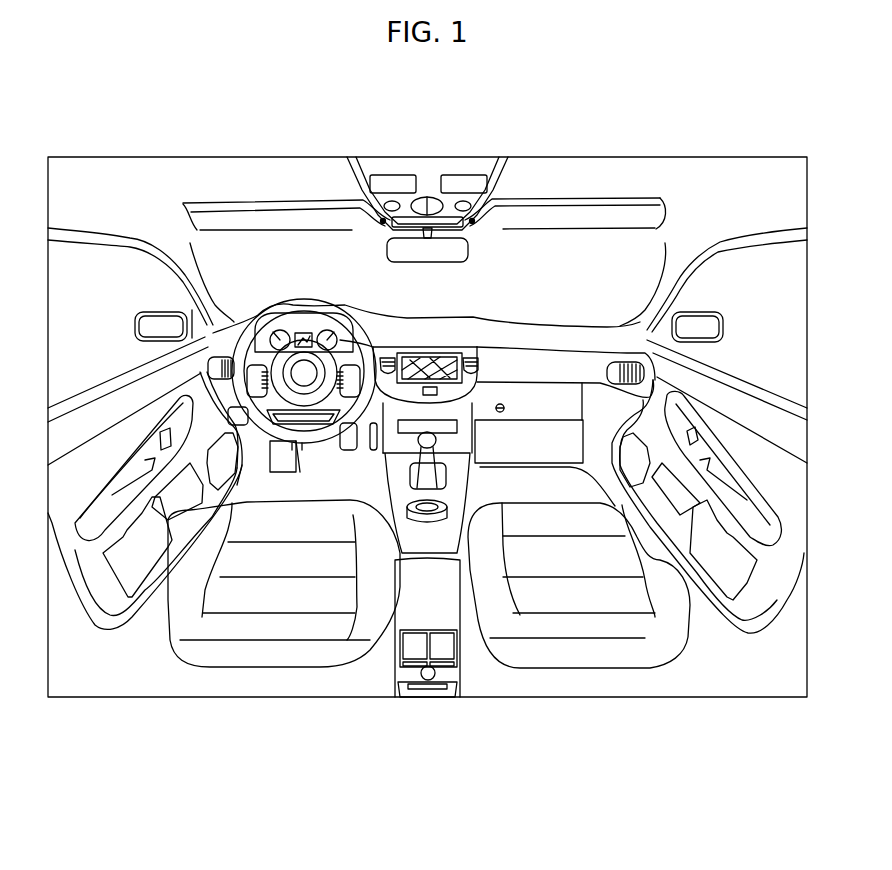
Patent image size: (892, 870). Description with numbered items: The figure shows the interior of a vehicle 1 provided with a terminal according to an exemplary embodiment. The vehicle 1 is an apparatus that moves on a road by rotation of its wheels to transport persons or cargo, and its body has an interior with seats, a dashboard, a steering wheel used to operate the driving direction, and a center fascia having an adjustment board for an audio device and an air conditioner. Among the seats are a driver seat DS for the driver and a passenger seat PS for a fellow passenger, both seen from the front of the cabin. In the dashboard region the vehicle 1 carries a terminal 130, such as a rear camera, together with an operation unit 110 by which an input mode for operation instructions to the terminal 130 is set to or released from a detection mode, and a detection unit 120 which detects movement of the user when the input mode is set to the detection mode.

The vehicle 1 is at (610, 152).
The operation unit 110 is at (324, 344).
The detection unit 120 is at (413, 357).
The terminal 130 is at (463, 357).
The driver seat DS is at (210, 653).
The passenger seat PS is at (606, 653).